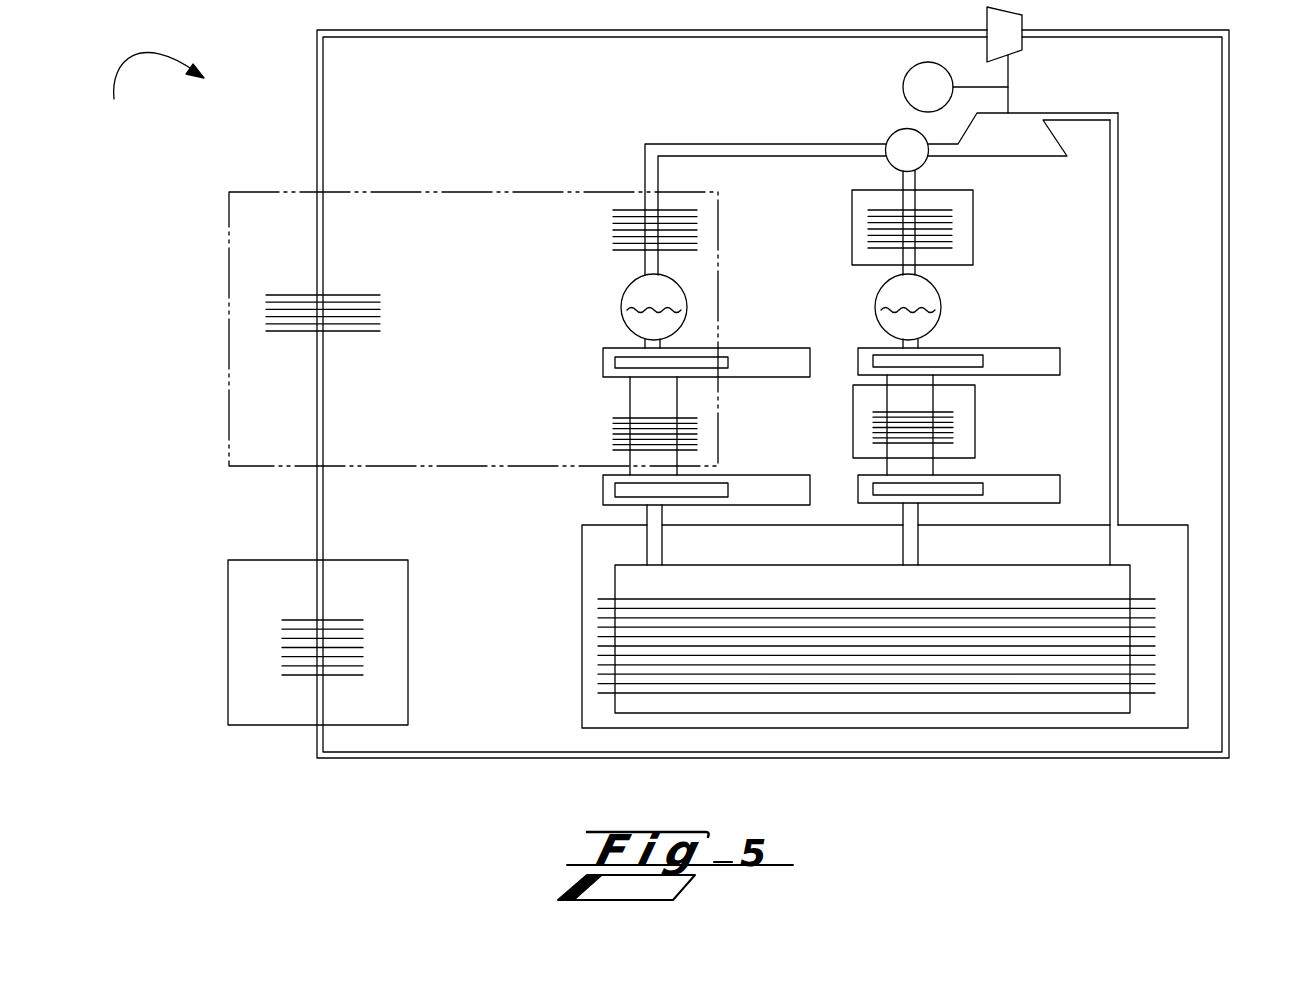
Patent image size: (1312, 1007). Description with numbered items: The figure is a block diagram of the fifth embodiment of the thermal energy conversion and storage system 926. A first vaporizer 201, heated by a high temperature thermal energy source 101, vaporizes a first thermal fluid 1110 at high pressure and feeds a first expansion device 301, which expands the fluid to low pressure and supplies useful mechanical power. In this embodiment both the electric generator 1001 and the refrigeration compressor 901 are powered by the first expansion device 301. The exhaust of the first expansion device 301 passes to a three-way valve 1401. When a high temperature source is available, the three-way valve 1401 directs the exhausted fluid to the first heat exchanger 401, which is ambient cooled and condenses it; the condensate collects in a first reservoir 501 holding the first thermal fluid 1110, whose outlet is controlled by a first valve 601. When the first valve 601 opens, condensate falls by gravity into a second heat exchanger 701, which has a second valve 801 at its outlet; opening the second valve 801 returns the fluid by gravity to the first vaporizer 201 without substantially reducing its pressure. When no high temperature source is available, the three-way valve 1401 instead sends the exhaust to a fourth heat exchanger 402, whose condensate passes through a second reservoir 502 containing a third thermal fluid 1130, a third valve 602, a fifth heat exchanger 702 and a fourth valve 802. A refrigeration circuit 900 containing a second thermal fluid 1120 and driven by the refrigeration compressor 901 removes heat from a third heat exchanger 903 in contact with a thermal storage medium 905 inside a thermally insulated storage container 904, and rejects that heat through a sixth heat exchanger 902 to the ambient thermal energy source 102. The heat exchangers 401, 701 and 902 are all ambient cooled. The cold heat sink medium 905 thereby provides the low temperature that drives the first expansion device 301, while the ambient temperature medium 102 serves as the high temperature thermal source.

The heat pump power plant 926 is at (150, 92).
The refrigeration circuit 900 is at (477, 753).
The refrigeration compressor 901 is at (1012, 52).
The electric generator 1001 is at (903, 90).
The first expansion device 301 is at (1030, 157).
The second thermal fluid 1120 is at (1220, 68).
The three-way valve 1401 is at (893, 132).
The first heat exchanger 401 is at (973, 215).
The ambient thermal energy source 102 is at (852, 220).
The first reservoir 501 is at (937, 290).
The first thermal fluid 1110 is at (930, 333).
The second reservoir 502 is at (623, 290).
The third thermal fluid 1130 is at (622, 316).
The fourth heat exchanger 402 is at (612, 230).
The third valve 602 is at (603, 363).
The fifth heat exchanger 702 is at (613, 437).
The fourth valve 802 is at (603, 495).
The first valve 601 is at (1000, 370).
The second heat exchanger 701 is at (953, 422).
The second valve 801 is at (1035, 477).
The high temperature thermal energy source 101 is at (1163, 528).
The first vaporizer 201 is at (1153, 647).
The thermally insulated storage container 904 is at (229, 268).
The third heat exchanger 903 is at (266, 320).
The thermal storage medium 905 is at (260, 411).
The sixth heat exchanger 902 is at (228, 640).